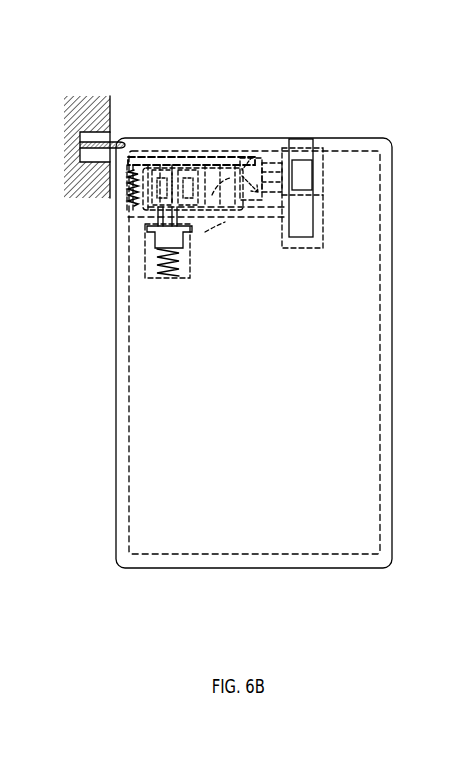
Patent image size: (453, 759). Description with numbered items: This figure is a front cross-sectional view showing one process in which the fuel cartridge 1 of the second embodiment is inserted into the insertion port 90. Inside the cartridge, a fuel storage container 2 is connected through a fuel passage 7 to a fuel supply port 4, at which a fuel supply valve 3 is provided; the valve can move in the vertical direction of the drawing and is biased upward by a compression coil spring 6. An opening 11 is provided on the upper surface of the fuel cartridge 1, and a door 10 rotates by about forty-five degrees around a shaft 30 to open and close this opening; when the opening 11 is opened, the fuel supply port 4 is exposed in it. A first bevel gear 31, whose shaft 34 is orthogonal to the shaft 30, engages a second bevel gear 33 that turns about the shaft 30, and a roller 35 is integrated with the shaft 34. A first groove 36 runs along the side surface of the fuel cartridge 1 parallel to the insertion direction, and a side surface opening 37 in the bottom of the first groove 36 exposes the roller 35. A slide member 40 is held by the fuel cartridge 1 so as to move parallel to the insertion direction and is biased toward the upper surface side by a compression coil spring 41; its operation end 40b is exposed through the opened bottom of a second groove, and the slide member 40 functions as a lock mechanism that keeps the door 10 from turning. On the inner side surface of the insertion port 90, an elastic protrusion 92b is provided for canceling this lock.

The fuel cartridge 1 is at (281, 366).
The fuel storage container 2 is at (254, 388).
The fuel supply valve 3 is at (206, 162).
The fuel supply port 4 is at (217, 149).
The compression coil spring 6 is at (131, 279).
The fuel passage 7 is at (137, 243).
The door 10 is at (191, 117).
The opening 11 is at (169, 139).
The shaft 30 is at (254, 134).
The first bevel gear 31 is at (251, 143).
The second bevel gear 33 is at (213, 248).
The shaft 34 is at (295, 134).
The roller 35 is at (329, 167).
The first groove 36 is at (354, 188).
The side surface opening 37 is at (356, 166).
The slide member 40 is at (100, 197).
The operation end 40b is at (79, 163).
The compression coil spring 41 is at (102, 211).
The insertion port 90 is at (109, 145).
The protrusion 92b is at (94, 109).